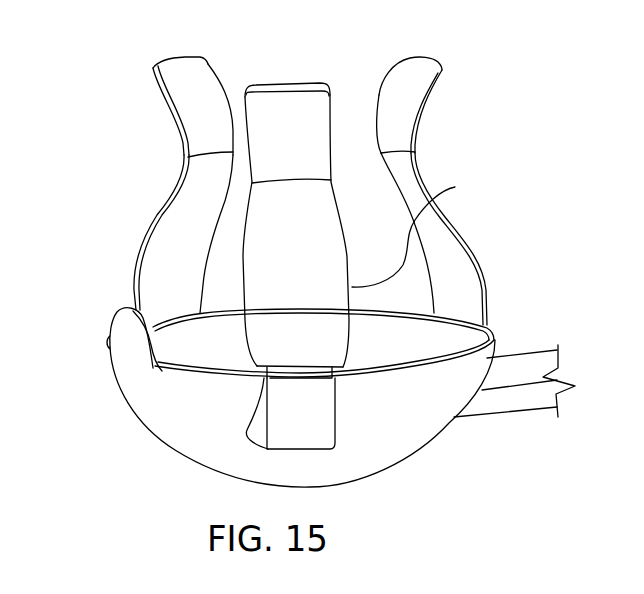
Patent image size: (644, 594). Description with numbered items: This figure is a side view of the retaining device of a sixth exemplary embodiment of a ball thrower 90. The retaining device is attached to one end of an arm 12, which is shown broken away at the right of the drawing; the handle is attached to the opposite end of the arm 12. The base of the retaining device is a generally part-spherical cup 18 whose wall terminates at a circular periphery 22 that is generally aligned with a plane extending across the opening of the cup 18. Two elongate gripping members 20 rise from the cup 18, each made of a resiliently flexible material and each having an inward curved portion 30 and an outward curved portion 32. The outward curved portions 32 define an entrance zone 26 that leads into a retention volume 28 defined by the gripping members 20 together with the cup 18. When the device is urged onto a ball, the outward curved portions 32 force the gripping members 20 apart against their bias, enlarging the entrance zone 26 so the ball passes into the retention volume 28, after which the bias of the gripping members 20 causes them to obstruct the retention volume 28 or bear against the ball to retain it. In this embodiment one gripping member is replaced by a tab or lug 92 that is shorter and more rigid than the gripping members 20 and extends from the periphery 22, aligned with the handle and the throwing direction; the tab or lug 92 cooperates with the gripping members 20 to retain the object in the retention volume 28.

The ball thrower 90 is at (132, 73).
The entrance zone 26 is at (210, 145).
The retention volume 28 is at (227, 260).
The gripping member 20 is at (415, 152).
The outward curved portion 32 is at (442, 70).
The inward curved portion 30 is at (485, 268).
The circular periphery 22 is at (492, 334).
The tab or lug 92 is at (113, 325).
The cup 18 is at (141, 409).
The arm 12 is at (507, 403).